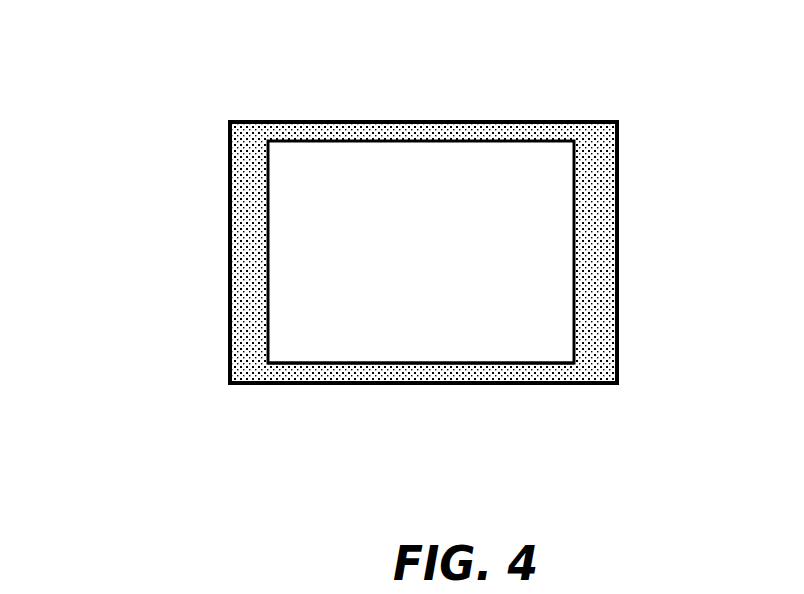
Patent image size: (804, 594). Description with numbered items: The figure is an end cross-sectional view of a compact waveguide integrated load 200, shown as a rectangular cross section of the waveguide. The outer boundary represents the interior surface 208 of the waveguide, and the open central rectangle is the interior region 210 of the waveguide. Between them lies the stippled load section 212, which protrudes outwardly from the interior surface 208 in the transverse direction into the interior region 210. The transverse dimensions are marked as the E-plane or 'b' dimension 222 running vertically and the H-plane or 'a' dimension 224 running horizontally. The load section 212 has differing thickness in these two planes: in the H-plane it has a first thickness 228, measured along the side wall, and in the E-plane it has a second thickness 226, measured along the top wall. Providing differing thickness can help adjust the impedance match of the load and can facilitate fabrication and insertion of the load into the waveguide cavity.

The compact waveguide integrated load 200 is at (145, 70).
The interior surface 208 is at (230, 243).
The interior region 210 is at (350, 325).
The load section 212 is at (442, 370).
The E-plane dimension 222 is at (680, 134).
The H-plane dimension 224 is at (617, 118).
The second thickness 226 is at (617, 122).
The first thickness 228 is at (647, 110).